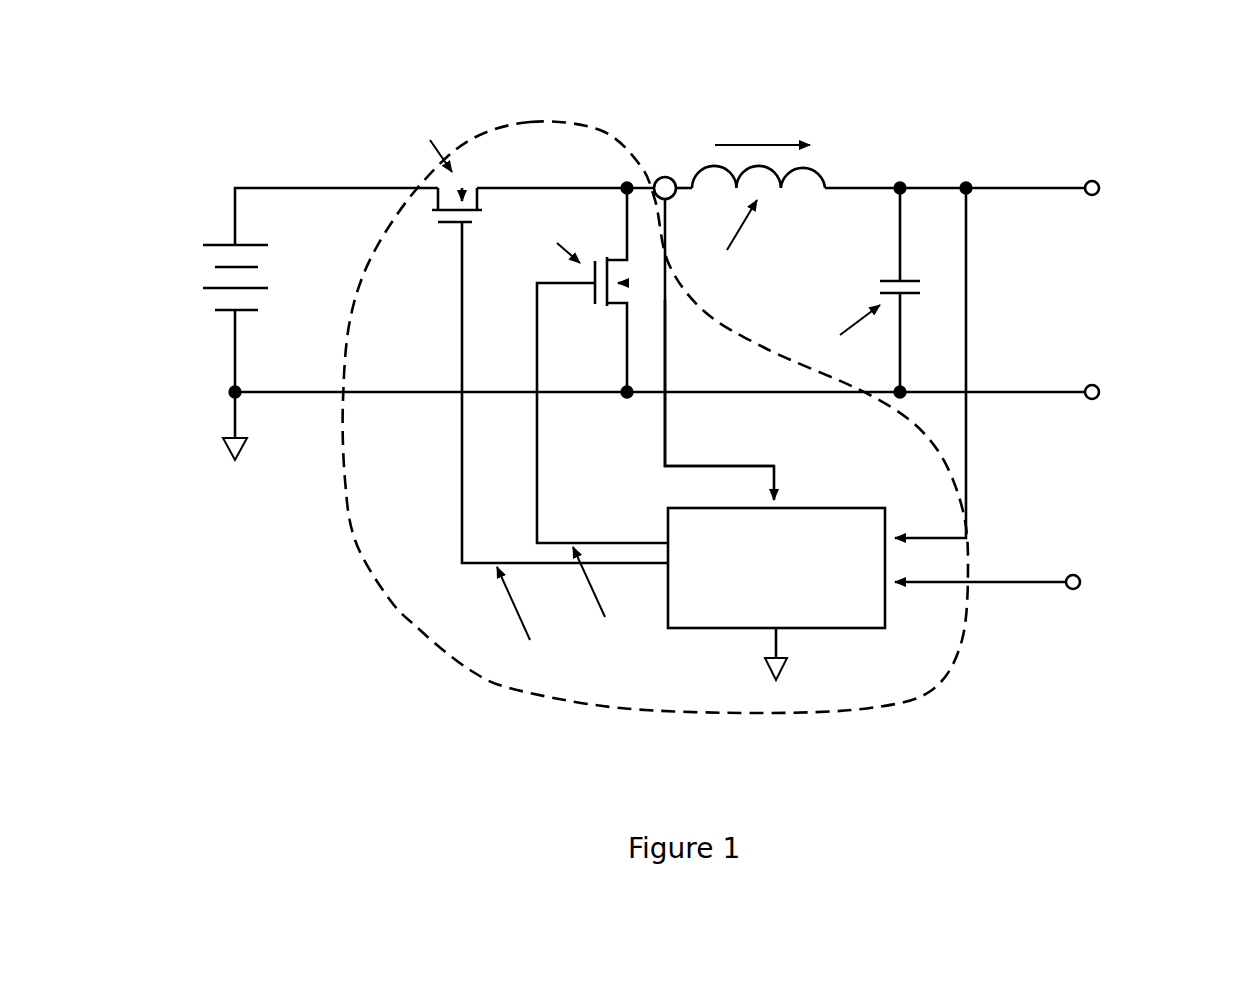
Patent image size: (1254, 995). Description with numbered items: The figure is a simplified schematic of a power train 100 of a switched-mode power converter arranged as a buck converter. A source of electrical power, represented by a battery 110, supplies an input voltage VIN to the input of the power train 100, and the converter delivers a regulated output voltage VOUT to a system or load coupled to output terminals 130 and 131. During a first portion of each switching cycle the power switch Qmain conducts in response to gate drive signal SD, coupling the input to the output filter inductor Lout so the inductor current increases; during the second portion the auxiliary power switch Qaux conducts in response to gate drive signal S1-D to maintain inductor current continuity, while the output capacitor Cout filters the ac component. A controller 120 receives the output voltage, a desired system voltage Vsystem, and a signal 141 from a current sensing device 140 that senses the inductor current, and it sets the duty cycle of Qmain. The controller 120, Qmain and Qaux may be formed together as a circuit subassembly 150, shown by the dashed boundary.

The power train 100 is at (1023, 93).
The battery 110 is at (190, 255).
The controller 120 is at (776, 568).
The output terminal 130 is at (1105, 173).
The output terminal 131 is at (1105, 400).
The current sensing device 140 is at (652, 163).
The signal 141 is at (788, 475).
The circuit subassembly 150 is at (960, 658).